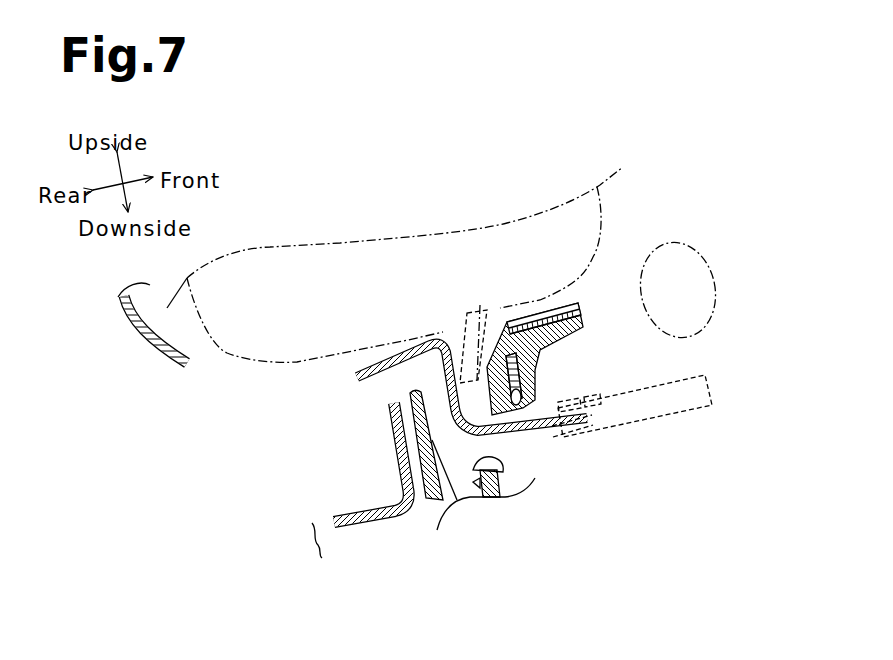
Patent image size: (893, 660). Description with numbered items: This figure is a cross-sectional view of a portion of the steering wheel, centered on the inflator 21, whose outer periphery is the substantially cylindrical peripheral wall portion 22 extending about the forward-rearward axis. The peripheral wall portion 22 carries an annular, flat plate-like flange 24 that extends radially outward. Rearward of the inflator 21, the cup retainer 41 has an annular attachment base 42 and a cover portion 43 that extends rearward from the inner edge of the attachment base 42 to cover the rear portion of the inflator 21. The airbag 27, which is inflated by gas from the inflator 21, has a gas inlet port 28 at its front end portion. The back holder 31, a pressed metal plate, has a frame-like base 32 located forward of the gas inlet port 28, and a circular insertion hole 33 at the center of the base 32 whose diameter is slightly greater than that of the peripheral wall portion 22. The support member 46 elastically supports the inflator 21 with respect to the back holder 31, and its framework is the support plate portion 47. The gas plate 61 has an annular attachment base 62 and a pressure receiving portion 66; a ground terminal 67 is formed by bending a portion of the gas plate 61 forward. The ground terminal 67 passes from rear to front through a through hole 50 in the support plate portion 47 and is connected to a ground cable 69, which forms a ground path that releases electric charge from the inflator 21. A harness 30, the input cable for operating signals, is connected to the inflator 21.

The inflator 21 is at (297, 362).
The peripheral wall portion 22 is at (395, 316).
The flange 24 is at (480, 305).
The airbag 27 is at (360, 493).
The gas inlet port 28 is at (408, 392).
The harness 30 is at (685, 242).
The back holder 31 is at (433, 500).
The base 32 is at (475, 522).
The insertion hole 33 is at (403, 390).
The cup retainer 41 is at (143, 333).
The attachment base 42 is at (393, 433).
The cover portion 43 is at (165, 340).
The support member 46 is at (550, 345).
The support plate portion 47 is at (583, 325).
The through hole 50 is at (523, 408).
The gas plate 61 is at (472, 367).
The attachment base 62 is at (472, 389).
The pressure receiving portion 66 is at (472, 389).
The ground terminal 67 is at (535, 440).
The ground cable 69 is at (643, 415).